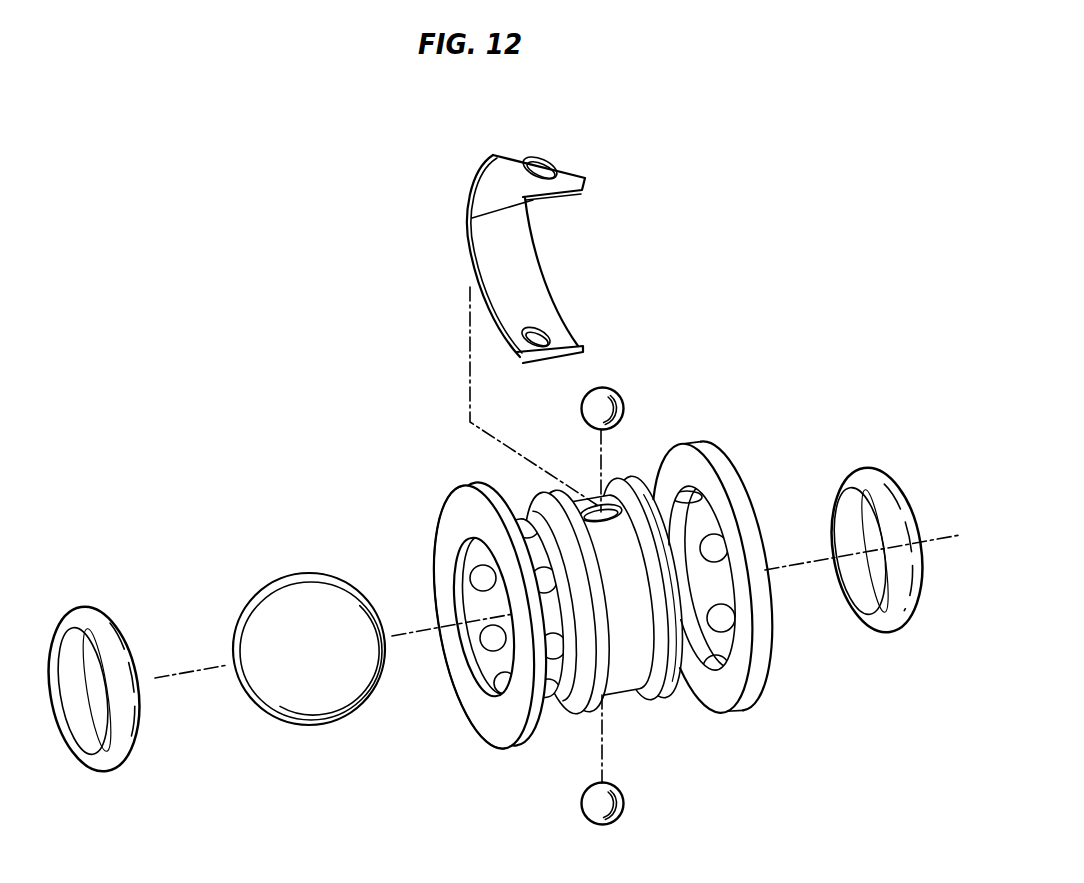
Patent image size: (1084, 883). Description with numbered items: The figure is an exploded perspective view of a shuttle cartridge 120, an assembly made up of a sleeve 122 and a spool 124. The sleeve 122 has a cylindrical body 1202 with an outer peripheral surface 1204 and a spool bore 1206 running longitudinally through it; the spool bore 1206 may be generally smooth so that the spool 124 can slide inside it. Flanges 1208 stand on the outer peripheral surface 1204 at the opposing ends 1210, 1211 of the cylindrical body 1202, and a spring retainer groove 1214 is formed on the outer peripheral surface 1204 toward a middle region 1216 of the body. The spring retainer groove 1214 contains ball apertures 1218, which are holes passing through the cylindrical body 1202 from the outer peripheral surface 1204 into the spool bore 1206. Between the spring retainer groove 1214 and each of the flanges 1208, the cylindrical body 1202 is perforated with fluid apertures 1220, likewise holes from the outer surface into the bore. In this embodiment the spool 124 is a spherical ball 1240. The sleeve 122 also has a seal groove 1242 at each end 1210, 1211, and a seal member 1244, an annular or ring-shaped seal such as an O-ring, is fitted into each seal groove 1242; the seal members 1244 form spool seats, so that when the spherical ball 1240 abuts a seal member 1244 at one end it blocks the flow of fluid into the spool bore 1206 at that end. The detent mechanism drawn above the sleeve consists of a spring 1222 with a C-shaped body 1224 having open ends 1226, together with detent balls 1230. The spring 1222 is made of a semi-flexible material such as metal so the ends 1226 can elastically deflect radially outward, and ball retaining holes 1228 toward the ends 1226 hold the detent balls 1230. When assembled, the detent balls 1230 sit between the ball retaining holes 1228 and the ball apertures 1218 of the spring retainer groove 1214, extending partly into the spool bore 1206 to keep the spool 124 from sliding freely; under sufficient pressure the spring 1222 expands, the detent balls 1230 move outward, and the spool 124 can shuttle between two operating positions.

The shuttle cartridge 120 is at (778, 174).
The sleeve 122 is at (431, 434).
The spool 124 is at (270, 531).
The cylindrical body 1202 is at (631, 476).
The outer peripheral surface 1204 is at (578, 723).
The spool bore 1206 is at (481, 610).
The flanges 1208 is at (498, 736).
The end 1210 is at (417, 512).
The end 1211 is at (751, 476).
The spring retainer groove 1214 is at (648, 667).
The middle region 1216 is at (634, 719).
The ball apertures 1218 is at (597, 498).
The fluid apertures 1220 is at (480, 577).
The spring 1222 is at (427, 213).
The C-shaped body 1224 is at (509, 261).
The open ends 1226 is at (583, 194).
The ball retaining holes 1228 is at (549, 163).
The detent balls 1230 is at (592, 402).
The spherical ball 1240 is at (300, 710).
The seal groove 1242 is at (473, 672).
The seal member 1244 is at (886, 481).